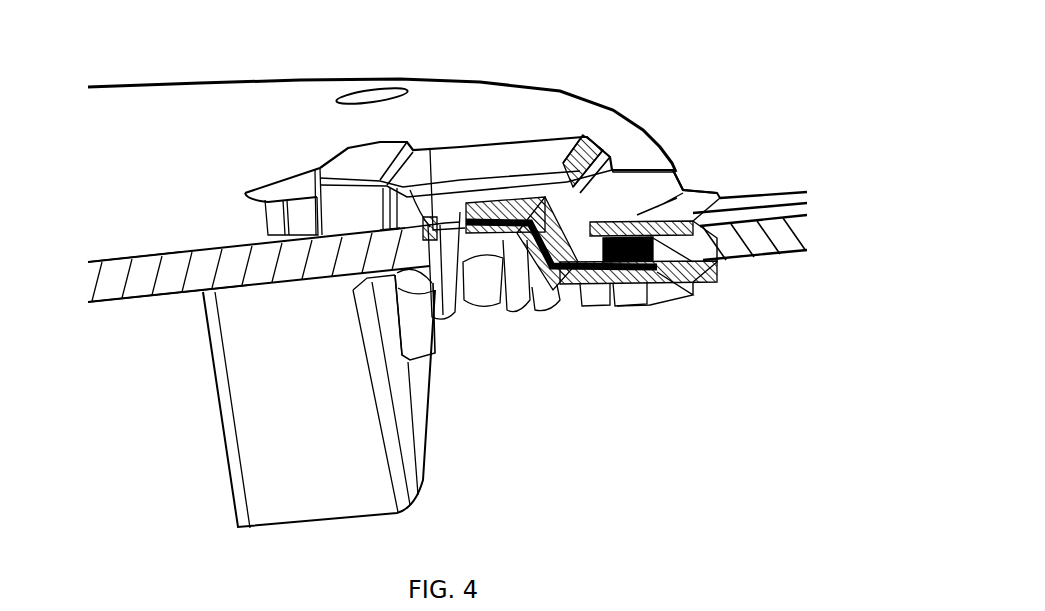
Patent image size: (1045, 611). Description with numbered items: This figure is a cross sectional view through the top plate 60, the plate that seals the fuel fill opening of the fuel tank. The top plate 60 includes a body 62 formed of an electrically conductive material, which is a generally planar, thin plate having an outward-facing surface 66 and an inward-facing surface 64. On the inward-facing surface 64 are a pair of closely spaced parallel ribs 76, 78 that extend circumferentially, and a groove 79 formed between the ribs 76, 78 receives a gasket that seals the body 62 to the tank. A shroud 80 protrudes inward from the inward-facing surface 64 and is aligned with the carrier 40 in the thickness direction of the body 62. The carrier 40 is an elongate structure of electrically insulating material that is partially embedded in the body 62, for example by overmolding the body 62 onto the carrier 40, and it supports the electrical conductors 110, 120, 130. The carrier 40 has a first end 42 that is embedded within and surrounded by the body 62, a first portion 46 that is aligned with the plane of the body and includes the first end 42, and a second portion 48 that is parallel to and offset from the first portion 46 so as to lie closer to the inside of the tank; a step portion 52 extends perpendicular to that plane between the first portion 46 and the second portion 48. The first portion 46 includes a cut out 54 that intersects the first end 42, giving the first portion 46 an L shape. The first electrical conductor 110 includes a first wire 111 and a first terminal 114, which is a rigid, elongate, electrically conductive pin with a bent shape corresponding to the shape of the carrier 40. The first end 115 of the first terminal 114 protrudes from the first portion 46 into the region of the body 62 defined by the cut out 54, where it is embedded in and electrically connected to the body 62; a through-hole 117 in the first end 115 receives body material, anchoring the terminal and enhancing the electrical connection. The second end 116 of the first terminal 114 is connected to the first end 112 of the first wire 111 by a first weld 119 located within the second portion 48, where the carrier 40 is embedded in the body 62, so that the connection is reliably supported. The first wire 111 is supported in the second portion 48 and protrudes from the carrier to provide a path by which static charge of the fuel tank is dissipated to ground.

The carrier 40 is at (640, 195).
The first end of the carrier 42 is at (470, 207).
The first portion of the carrier 46 is at (502, 207).
The second portion of the carrier 48 is at (690, 177).
The step portion of the carrier 52 is at (597, 200).
The cut out 54 is at (433, 240).
The top plate 60 is at (140, 283).
The body 62 is at (130, 340).
The inward-facing surface 64 is at (100, 307).
The outward-facing surface 66 is at (252, 112).
The rib 76 is at (527, 300).
The rib 78 is at (450, 327).
The groove 79 is at (483, 290).
The shroud 80 is at (316, 446).
The first electrical conductor 110 is at (768, 250).
The first wire 111 is at (776, 292).
The first end of the first wire 112 is at (660, 307).
The first terminal 114 is at (537, 207).
The first end of the first terminal 115 is at (413, 240).
The second end of the first terminal 116 is at (623, 290).
The through-hole 117 is at (427, 262).
The first weld 119 is at (577, 310).
The electrical conductor 120 is at (747, 193).
The electrical conductor 130 is at (798, 188).